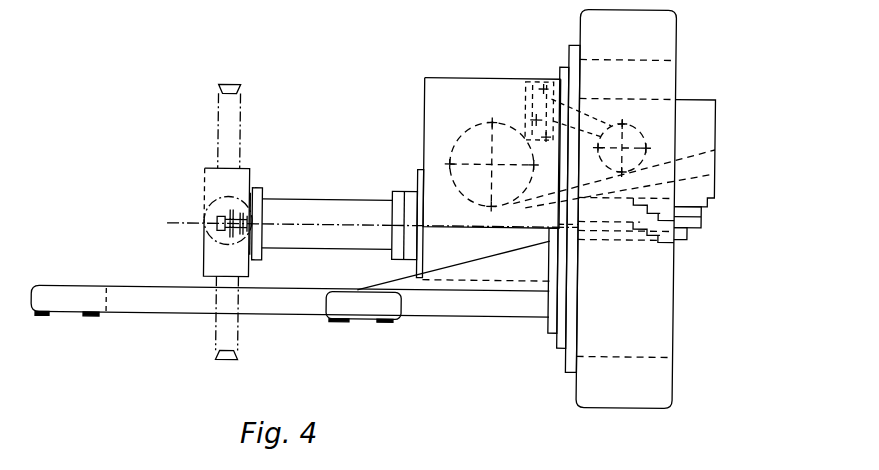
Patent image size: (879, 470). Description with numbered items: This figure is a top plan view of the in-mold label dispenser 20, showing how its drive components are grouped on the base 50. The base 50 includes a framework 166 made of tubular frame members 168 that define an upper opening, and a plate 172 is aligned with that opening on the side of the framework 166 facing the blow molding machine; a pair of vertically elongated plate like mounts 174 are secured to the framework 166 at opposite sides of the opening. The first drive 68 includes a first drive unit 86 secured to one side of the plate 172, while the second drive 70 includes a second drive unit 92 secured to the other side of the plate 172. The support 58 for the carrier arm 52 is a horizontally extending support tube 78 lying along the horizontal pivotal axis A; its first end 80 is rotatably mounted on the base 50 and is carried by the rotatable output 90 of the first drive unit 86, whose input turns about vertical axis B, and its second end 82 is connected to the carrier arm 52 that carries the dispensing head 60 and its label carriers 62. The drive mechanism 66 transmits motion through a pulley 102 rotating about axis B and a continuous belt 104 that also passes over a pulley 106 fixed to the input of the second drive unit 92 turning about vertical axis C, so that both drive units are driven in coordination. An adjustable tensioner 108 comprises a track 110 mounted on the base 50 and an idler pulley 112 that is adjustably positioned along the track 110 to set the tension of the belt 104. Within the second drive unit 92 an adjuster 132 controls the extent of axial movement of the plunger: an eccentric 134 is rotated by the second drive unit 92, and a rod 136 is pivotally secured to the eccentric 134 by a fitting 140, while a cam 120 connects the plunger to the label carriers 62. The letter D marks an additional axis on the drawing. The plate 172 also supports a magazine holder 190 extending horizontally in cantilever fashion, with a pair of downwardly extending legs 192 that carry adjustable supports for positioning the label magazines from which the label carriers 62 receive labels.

The in-mold label dispenser 20 is at (661, 228).
The base 50 is at (683, 38).
The carrier arm 52 is at (225, 196).
The support 58 is at (327, 197).
The dispensing head 60 is at (206, 169).
The label carriers 62 is at (246, 103).
The drive mechanism 66 is at (472, 182).
The first drive 68 is at (421, 102).
The second drive 70 is at (662, 123).
The support tube 78 is at (283, 202).
The first end of support tube 80 is at (393, 195).
The second end of support tube 82 is at (258, 191).
The first drive unit 86 is at (440, 79).
The rotatable output 90 is at (408, 258).
The second drive unit 92 is at (712, 133).
The pulley 102 is at (452, 163).
The continuous belt 104 is at (640, 186).
The pulley 106 is at (634, 172).
The adjustable tensioner 108 is at (533, 77).
The track 110 is at (530, 74).
The idler pulley 112 is at (515, 91).
The cam 120 is at (221, 231).
The adjuster 132 is at (692, 242).
The eccentric 134 is at (701, 221).
The rod 136 is at (600, 233).
The fitting 140 is at (657, 240).
The framework 166 is at (627, 411).
The tubular frame members 168 is at (683, 60).
The plate 172 is at (563, 68).
The plate like mounts 174 is at (571, 62).
The magazine holder 190 is at (263, 305).
The legs 192 is at (108, 300).
The pivotal axis A is at (190, 221).
The vertical axis B is at (491, 164).
The vertical axis C is at (624, 147).
The axis D is at (535, 120).